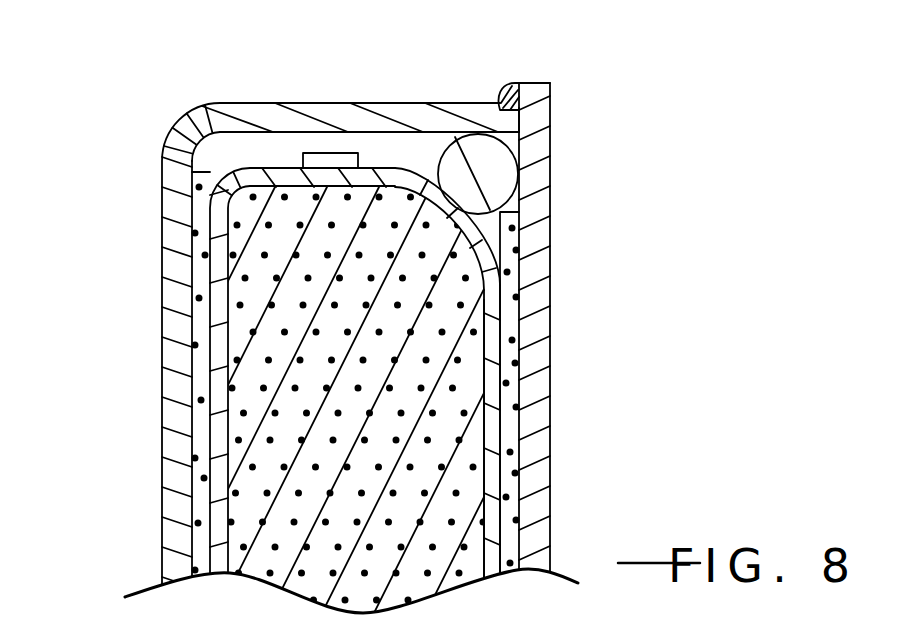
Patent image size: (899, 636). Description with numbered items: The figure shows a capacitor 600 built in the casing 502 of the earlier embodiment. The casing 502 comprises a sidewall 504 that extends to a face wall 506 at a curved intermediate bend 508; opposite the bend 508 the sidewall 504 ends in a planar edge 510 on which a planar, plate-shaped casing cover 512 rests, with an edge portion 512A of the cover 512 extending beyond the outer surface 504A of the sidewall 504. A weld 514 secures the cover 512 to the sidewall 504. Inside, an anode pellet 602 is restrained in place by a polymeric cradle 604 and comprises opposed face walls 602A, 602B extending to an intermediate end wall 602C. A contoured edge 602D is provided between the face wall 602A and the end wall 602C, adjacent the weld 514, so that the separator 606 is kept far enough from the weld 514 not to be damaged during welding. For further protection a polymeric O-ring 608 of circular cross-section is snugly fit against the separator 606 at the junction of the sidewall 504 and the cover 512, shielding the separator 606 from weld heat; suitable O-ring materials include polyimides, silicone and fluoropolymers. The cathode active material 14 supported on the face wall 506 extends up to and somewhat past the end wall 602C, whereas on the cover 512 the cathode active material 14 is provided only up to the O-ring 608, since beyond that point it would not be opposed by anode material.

The cathode active material 14 is at (195, 288).
The casing 502 is at (151, 170).
The sidewall 504 is at (320, 102).
The outer surface of the sidewall 504A is at (237, 102).
The face wall 506 is at (178, 357).
The curved intermediate bend 508 is at (172, 137).
The planar edge 510 is at (519, 119).
The casing cover 512 is at (535, 210).
The edge portion of the cover 512A is at (552, 91).
The weld 514 is at (510, 88).
The capacitor 600 is at (663, 167).
The anode pellet 602 is at (460, 482).
The face wall of the anode pellet 602A is at (478, 515).
The face wall of the anode pellet 602B is at (227, 513).
The end wall of the anode pellet 602C is at (293, 185).
The contoured edge 602D is at (480, 232).
The polymeric cradle 604 is at (388, 143).
The separator 606 is at (497, 437).
The polymeric O-ring 608 is at (490, 168).